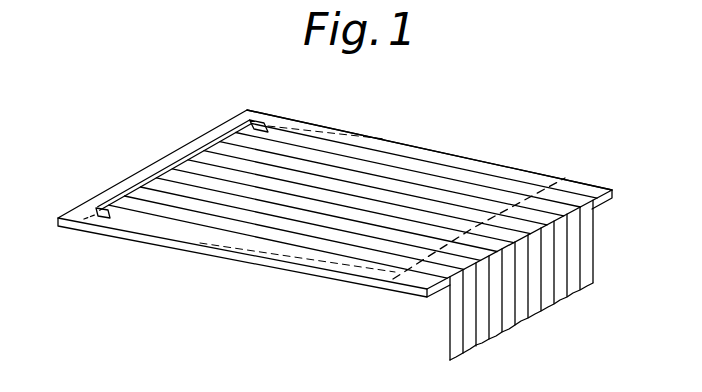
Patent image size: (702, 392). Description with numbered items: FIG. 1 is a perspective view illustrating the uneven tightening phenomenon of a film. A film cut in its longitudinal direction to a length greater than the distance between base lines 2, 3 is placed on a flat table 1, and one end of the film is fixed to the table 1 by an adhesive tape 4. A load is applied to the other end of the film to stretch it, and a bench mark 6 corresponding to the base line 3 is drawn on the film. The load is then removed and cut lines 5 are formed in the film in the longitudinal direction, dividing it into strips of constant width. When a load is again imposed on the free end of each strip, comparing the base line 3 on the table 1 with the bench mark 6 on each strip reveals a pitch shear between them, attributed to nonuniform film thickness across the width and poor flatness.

The flat table 1 is at (203, 240).
The base line 2 is at (263, 122).
The base line 3 is at (563, 180).
The adhesive tape 4 is at (103, 210).
The cut lines 5 is at (387, 173).
The bench mark 6 is at (480, 220).